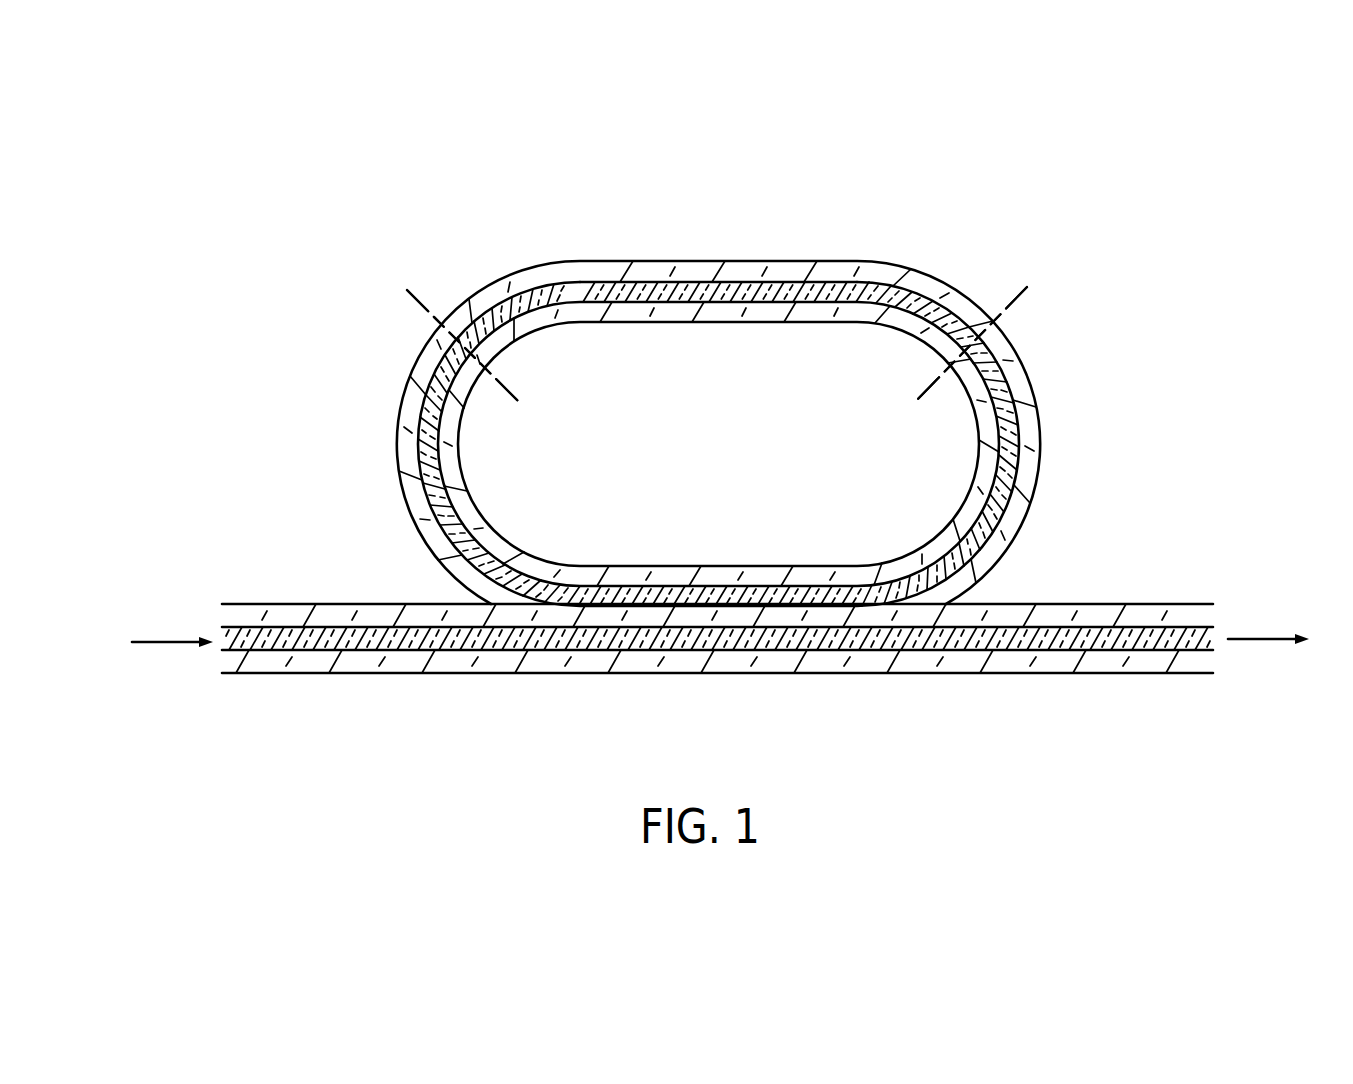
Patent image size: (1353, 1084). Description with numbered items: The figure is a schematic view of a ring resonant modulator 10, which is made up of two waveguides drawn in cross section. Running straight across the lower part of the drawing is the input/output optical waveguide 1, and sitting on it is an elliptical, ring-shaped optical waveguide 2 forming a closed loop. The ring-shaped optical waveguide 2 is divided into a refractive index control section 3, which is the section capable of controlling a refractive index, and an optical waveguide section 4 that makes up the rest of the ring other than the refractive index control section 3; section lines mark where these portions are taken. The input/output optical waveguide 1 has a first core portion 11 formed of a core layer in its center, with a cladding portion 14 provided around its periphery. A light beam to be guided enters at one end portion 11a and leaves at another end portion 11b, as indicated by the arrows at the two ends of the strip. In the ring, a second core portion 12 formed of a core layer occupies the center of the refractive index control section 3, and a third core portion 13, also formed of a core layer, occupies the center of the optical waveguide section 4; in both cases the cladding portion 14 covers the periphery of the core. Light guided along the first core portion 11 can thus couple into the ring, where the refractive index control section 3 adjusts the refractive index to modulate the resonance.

The input/output optical waveguide 1 is at (1143, 579).
The ring-shaped optical waveguide 2 is at (497, 257).
The refractive index control section 3 is at (507, 400).
The optical waveguide section 4 is at (500, 397).
The ring resonant modulator 10 is at (1162, 343).
The first core portion 11 is at (1050, 647).
The one end portion 11a is at (213, 655).
The another end portion 11b is at (1223, 651).
The second core portion 12 is at (735, 281).
The third core portion 13 is at (1017, 468).
The cladding portion 14 is at (1020, 382).